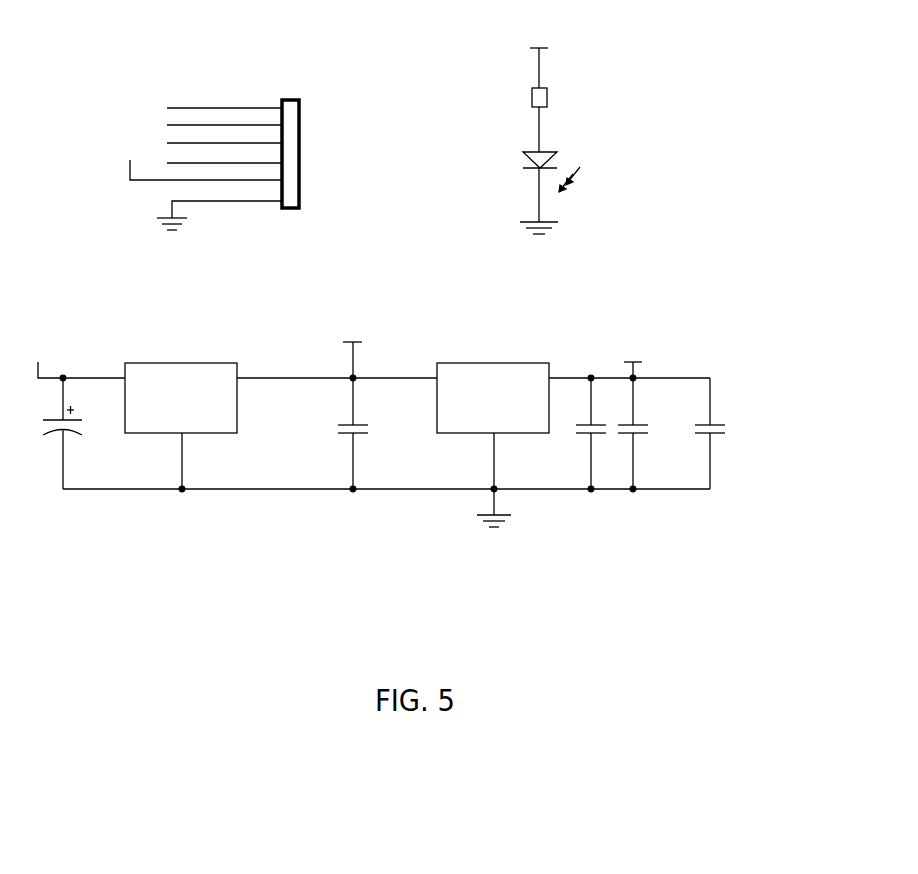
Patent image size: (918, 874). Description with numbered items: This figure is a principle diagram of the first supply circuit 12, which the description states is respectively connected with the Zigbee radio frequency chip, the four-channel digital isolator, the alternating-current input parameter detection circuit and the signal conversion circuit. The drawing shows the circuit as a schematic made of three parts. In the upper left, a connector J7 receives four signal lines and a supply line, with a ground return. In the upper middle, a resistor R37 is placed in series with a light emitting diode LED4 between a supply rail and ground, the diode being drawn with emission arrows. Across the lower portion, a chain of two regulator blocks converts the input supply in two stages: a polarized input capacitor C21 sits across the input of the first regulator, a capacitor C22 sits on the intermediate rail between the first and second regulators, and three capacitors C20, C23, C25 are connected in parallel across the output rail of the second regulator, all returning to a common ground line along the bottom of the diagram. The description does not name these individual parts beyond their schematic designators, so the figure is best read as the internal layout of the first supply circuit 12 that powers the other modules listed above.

The first supply circuit 12 is at (645, 268).
The RS-485 connector J7 is at (215, 175).
The resistor R37 is at (522, 98).
The light emitting diode LED4 is at (555, 163).
The electrolytic capacitor C21 is at (55, 433).
The capacitor C22 is at (343, 433).
The capacitor C20 is at (582, 433).
The capacitor C23 is at (643, 433).
The capacitor C25 is at (720, 433).